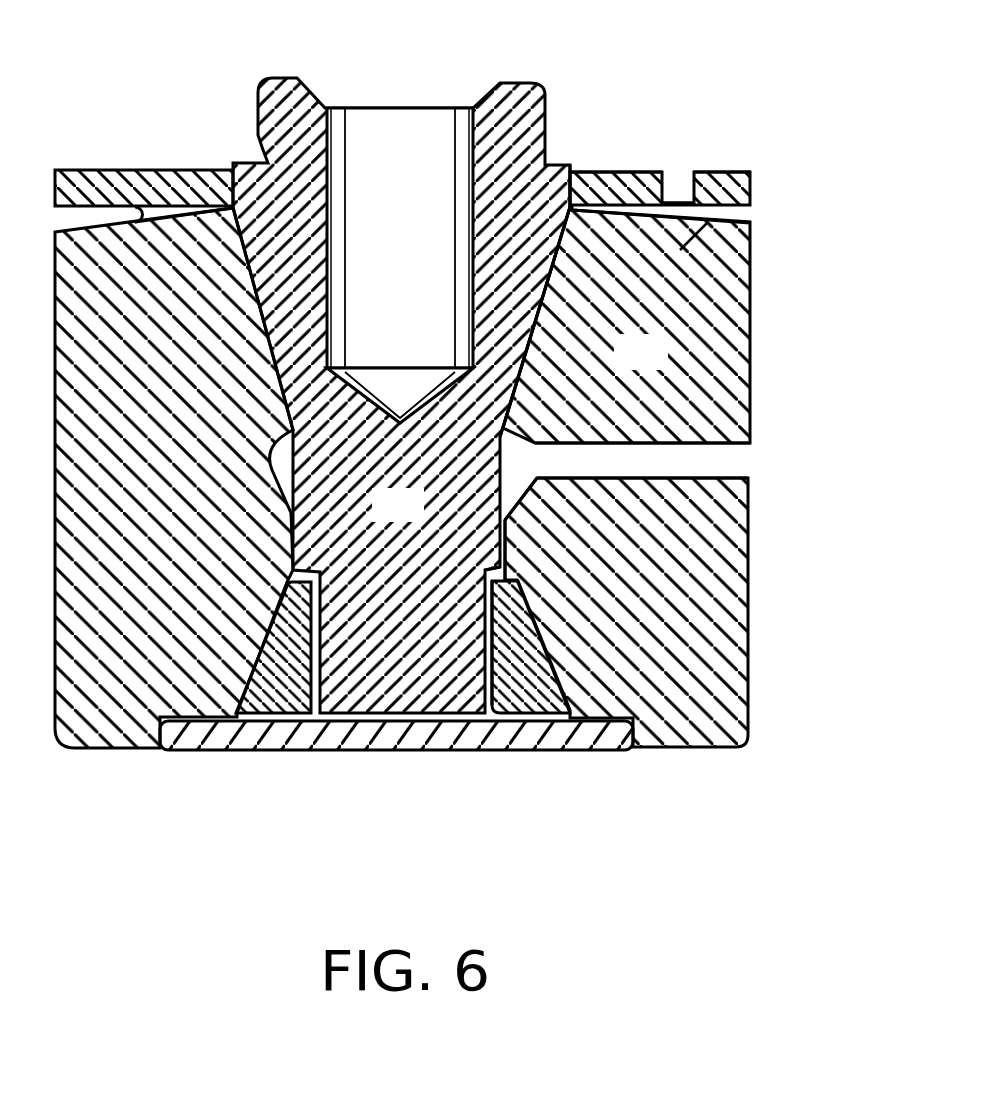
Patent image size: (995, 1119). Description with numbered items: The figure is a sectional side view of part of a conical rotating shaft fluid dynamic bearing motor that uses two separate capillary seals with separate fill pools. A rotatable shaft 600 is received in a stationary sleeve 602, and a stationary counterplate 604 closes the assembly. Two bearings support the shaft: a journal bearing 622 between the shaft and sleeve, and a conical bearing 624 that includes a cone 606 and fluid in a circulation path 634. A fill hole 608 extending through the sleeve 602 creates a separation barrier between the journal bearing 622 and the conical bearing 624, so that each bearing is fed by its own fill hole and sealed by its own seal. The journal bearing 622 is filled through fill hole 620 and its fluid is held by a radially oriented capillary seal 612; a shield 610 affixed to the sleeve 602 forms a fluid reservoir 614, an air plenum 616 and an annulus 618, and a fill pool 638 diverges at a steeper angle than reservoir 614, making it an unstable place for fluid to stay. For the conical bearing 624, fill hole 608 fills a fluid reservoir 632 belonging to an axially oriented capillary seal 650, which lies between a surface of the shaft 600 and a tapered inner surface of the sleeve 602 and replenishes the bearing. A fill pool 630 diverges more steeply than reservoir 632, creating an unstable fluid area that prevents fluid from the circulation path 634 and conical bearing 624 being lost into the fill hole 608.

The rotatable shaft 600 is at (420, 519).
The stationary sleeve 602 is at (618, 366).
The stationary counterplate 604 is at (570, 750).
The cone 606 is at (567, 697).
The fill hole 608 is at (690, 463).
The shield 610 is at (668, 172).
The radially oriented capillary seal 612 is at (702, 172).
The fluid reservoir 614 is at (620, 205).
The air plenum 616 is at (750, 203).
The annulus 618 is at (570, 172).
The fill hole 620 is at (707, 172).
The journal bearing 622 is at (560, 237).
The conical bearing 624 is at (560, 663).
The fill pool 630 is at (507, 520).
The fluid reservoir 632 is at (495, 575).
The circulation path 634 is at (490, 657).
The fill pool 638 is at (737, 263).
The axially oriented capillary seal 650 is at (500, 548).